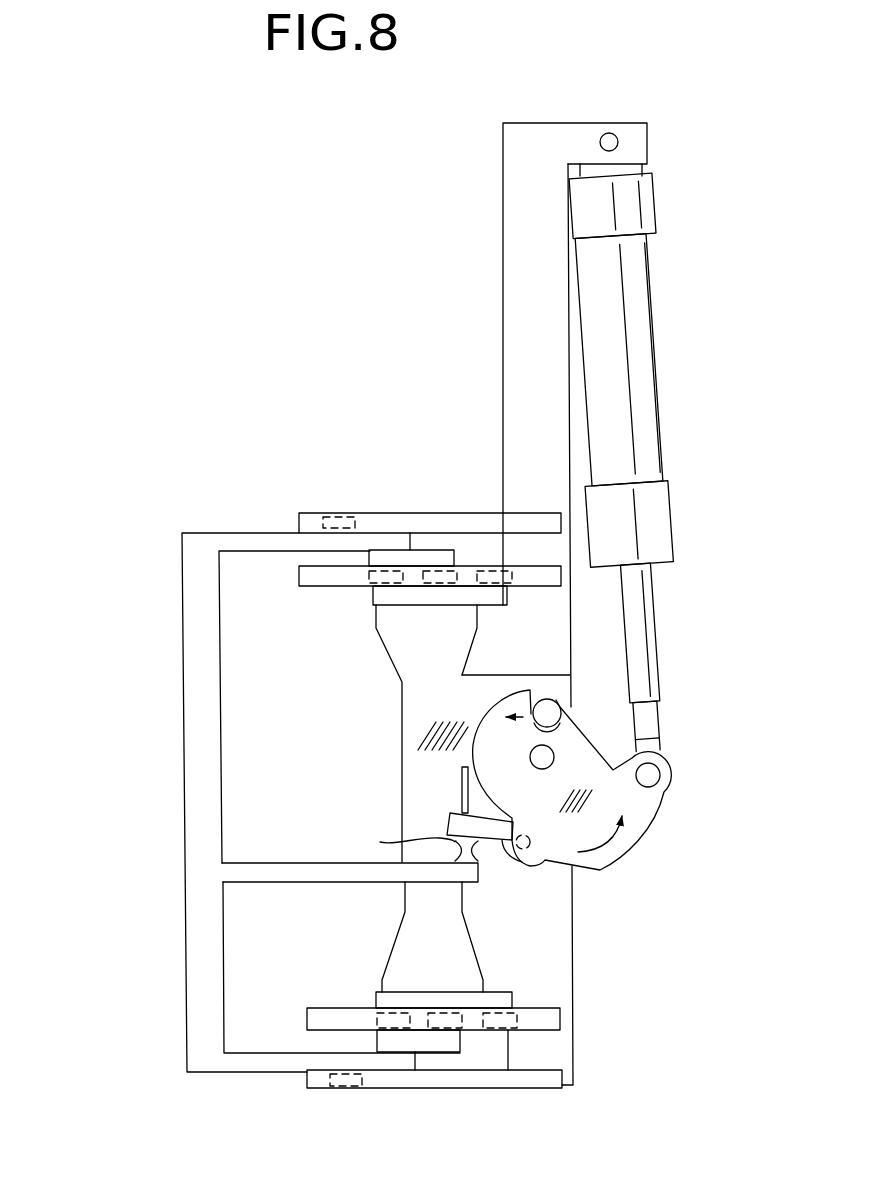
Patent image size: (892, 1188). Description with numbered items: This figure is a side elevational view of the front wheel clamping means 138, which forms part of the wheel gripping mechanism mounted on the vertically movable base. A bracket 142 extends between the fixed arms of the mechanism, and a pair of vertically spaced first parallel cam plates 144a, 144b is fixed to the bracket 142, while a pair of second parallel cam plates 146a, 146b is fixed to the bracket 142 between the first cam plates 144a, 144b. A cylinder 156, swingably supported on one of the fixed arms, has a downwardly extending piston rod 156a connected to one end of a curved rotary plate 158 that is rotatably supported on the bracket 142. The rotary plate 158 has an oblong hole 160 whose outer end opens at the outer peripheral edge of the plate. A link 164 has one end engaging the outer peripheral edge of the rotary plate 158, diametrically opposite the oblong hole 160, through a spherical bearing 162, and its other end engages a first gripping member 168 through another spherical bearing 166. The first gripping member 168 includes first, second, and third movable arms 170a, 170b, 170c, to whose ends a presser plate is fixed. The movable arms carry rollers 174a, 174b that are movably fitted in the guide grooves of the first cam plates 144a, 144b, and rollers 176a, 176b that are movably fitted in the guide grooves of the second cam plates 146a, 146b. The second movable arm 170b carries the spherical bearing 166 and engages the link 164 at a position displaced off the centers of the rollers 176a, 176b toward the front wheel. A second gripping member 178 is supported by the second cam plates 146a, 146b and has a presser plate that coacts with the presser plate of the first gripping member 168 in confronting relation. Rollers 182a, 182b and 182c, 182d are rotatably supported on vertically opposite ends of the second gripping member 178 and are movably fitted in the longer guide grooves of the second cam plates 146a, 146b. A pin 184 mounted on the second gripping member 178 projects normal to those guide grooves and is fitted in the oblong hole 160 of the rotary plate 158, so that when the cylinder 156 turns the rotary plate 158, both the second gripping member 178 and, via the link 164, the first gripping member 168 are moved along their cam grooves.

The front wheel clamping means 138 is at (297, 318).
The bracket 142 is at (503, 330).
The cylinder 156 is at (655, 330).
The piston rod 156a is at (655, 642).
The first cam plate 144a is at (438, 513).
The first cam plate 144b is at (500, 1088).
The second cam plate 146a is at (312, 588).
The second cam plate 146b is at (310, 1010).
The first movable arm 170a is at (228, 533).
The second movable arm 170b is at (262, 866).
The third movable arm 170c is at (228, 1073).
The roller 174a is at (342, 515).
The roller 174b is at (350, 1088).
The roller 176a is at (441, 585).
The roller 176b is at (445, 1013).
The roller 182a is at (371, 586).
The roller 182b is at (511, 585).
The roller 182c is at (376, 1008).
The roller 182d is at (500, 1008).
The second gripping member 178 is at (396, 690).
The first gripping member 168 is at (283, 762).
The oblong hole 160 is at (522, 785).
The rotary plate 158 is at (662, 824).
The pin 184 is at (559, 703).
The spherical bearing 166 is at (447, 836).
The link 164 is at (484, 836).
The spherical bearing 162 is at (530, 870).